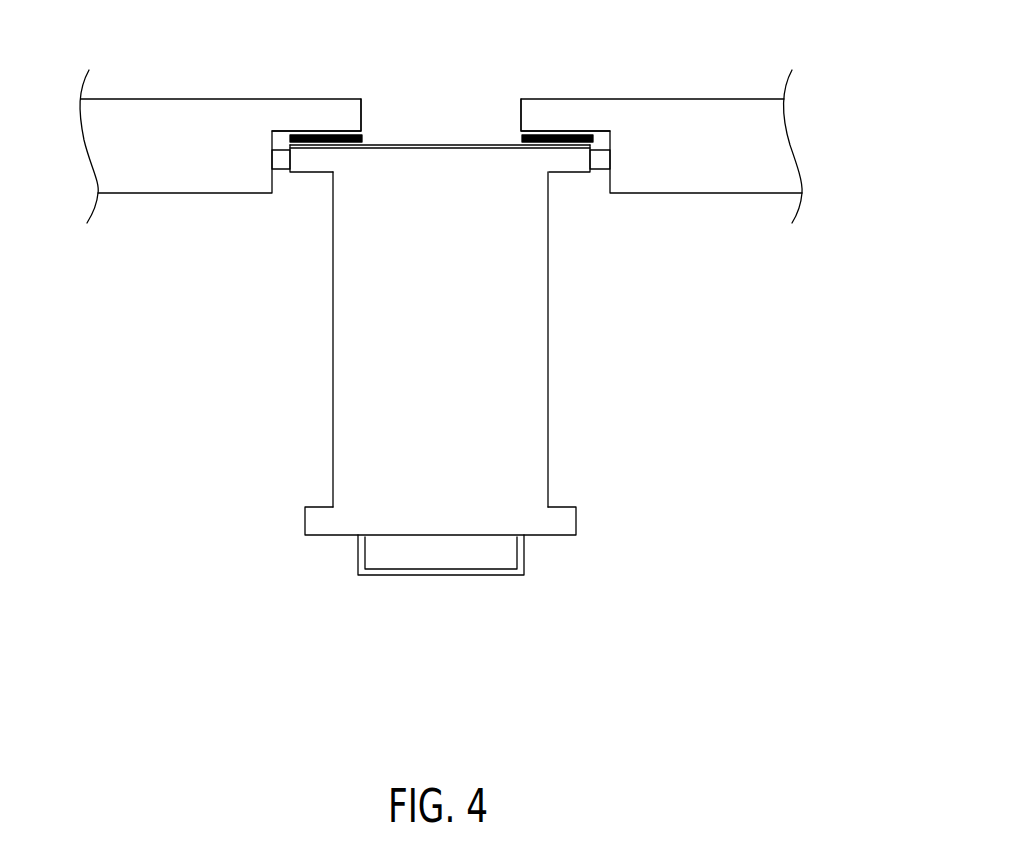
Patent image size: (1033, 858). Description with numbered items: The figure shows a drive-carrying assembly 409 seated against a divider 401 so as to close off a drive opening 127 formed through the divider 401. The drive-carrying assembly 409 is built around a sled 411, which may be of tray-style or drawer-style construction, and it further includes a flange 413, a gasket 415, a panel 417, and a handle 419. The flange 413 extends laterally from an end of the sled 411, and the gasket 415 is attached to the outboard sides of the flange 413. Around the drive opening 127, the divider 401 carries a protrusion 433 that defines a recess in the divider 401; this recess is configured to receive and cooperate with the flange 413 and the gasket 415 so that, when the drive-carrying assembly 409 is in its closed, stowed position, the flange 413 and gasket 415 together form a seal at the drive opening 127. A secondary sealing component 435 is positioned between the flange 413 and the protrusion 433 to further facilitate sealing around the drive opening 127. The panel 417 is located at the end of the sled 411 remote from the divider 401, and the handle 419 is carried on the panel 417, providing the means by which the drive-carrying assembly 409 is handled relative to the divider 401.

The drive opening 127 is at (439, 136).
The divider 401 is at (713, 110).
The drive-carrying assembly 409 is at (522, 407).
The sled 411 is at (520, 308).
The flange 413 is at (315, 165).
The gasket 415 is at (283, 153).
The panel 417 is at (567, 523).
The handle 419 is at (377, 573).
The protrusion 433 is at (330, 110).
The secondary sealing component 435 is at (362, 138).